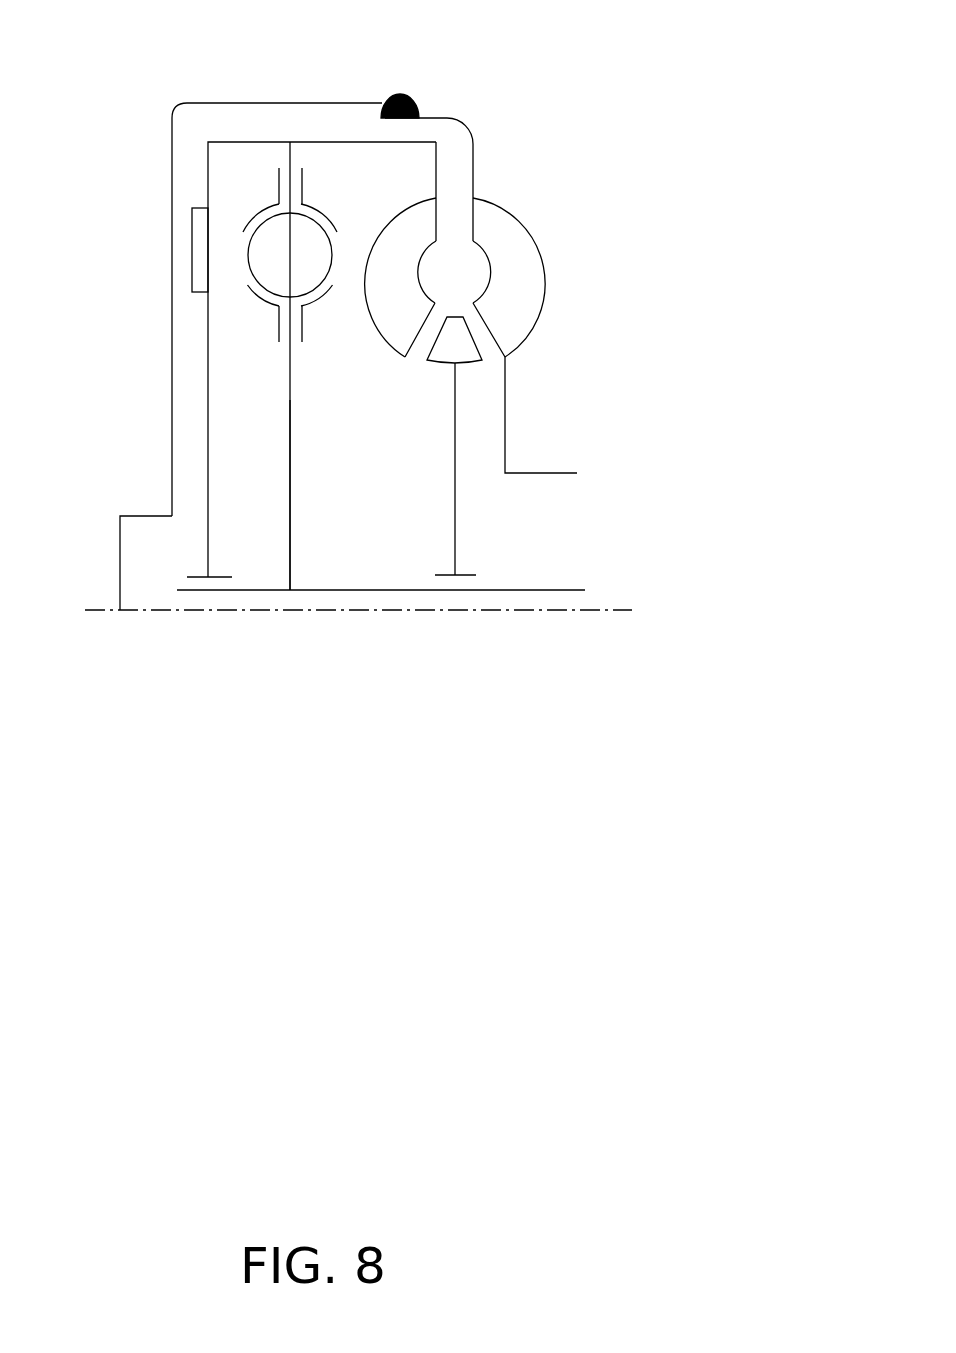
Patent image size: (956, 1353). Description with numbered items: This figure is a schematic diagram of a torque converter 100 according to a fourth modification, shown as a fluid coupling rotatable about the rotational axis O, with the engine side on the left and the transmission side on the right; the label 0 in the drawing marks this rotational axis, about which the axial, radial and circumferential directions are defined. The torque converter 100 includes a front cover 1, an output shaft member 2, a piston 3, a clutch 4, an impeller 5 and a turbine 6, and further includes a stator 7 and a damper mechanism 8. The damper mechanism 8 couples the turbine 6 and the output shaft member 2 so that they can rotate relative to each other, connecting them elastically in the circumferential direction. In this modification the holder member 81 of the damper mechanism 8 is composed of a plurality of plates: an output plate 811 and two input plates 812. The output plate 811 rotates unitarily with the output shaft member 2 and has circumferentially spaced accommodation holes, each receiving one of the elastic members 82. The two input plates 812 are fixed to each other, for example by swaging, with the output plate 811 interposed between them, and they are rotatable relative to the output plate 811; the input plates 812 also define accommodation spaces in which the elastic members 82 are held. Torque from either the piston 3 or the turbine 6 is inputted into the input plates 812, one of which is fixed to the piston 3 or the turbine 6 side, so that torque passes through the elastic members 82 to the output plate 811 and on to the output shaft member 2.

The torque converter 100 is at (488, 92).
The front cover 1 is at (165, 244).
The output shaft member 2 is at (330, 590).
The piston 3 is at (205, 373).
The clutch 4 is at (196, 203).
The impeller 5 is at (540, 252).
The turbine 6 is at (434, 138).
The stator 7 is at (435, 365).
The damper mechanism 8 is at (309, 310).
The holder member 81 is at (283, 413).
The output plate 811 is at (291, 452).
The input plates 812 is at (323, 300).
The elastic members 82 is at (248, 257).
The ground line 0 is at (604, 611).